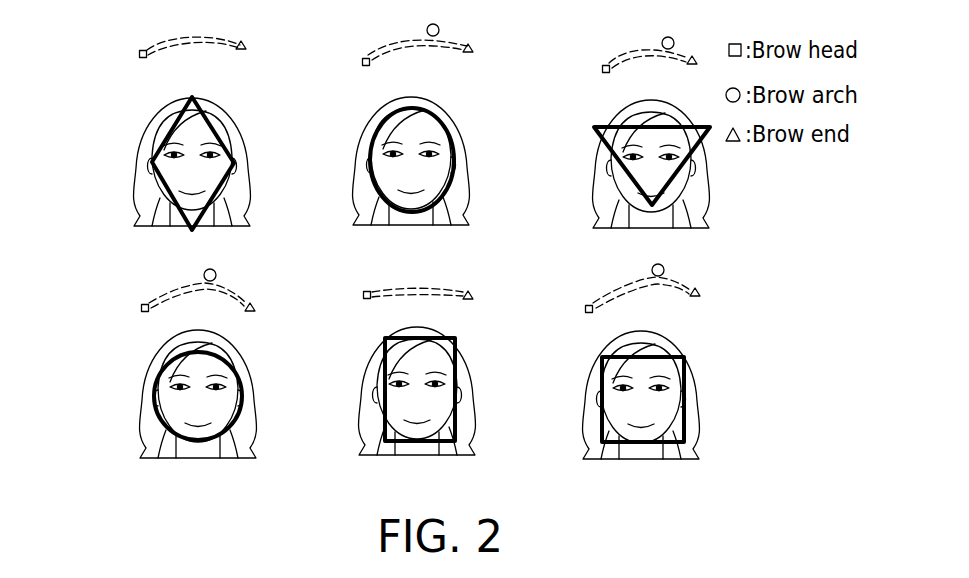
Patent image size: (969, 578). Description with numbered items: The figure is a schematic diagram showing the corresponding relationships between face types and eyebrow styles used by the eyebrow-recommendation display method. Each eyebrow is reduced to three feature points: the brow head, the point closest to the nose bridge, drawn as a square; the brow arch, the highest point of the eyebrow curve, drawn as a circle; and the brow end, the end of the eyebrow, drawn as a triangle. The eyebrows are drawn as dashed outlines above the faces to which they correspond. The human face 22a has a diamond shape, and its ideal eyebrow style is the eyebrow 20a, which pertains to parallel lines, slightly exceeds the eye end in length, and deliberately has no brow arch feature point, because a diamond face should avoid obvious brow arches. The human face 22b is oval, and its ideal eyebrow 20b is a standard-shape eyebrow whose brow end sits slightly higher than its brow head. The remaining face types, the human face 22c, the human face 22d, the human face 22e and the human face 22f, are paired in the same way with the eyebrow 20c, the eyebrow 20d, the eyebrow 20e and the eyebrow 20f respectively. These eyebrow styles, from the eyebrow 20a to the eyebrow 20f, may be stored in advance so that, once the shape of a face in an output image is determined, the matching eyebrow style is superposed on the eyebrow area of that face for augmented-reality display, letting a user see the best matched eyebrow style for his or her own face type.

The eyebrow 20a is at (113, 57).
The eyebrow 20b is at (343, 57).
The eyebrow 20c is at (571, 57).
The eyebrow 20d is at (115, 312).
The eyebrow 20e is at (343, 312).
The eyebrow 20f is at (570, 312).
The human face 22a is at (113, 193).
The human face 22b is at (343, 194).
The human face 22c is at (571, 194).
The human face 22d is at (115, 446).
The human face 22e is at (343, 446).
The human face 22f is at (570, 446).